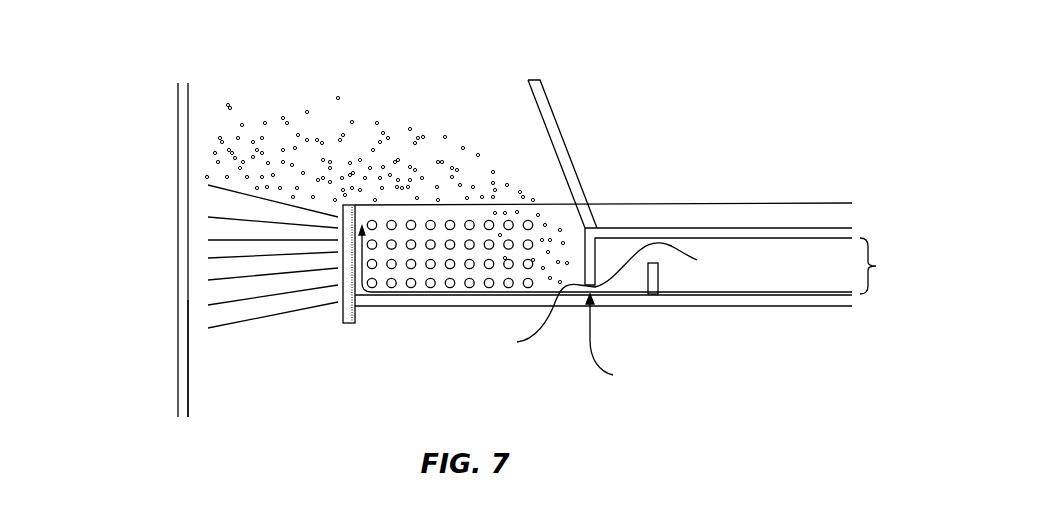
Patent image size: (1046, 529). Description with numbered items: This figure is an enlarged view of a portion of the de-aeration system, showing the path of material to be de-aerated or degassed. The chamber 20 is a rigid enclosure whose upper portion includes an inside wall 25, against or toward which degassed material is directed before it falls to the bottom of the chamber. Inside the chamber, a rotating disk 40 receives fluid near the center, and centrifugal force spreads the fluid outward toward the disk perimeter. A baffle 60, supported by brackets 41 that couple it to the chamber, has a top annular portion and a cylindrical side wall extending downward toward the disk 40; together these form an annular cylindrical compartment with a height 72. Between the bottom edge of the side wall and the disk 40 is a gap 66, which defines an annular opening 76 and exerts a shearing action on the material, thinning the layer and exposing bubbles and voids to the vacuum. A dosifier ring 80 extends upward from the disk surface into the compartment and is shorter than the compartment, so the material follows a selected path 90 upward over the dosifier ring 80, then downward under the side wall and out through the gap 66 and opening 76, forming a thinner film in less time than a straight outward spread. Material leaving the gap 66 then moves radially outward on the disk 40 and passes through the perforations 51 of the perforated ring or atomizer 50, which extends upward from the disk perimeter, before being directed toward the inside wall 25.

The chamber 20 is at (177, 213).
The inside wall 25 is at (189, 383).
The disk 40 is at (612, 307).
The brackets 41 is at (555, 120).
The perforated ring or atomizer 50 is at (666, 203).
The perforations 51 is at (450, 288).
The baffle 60 is at (767, 228).
The gap 66 is at (591, 299).
The height 72 is at (878, 266).
The annular opening 76 is at (613, 343).
The dosifier ring 80 is at (658, 278).
The selected path 90 is at (371, 294).